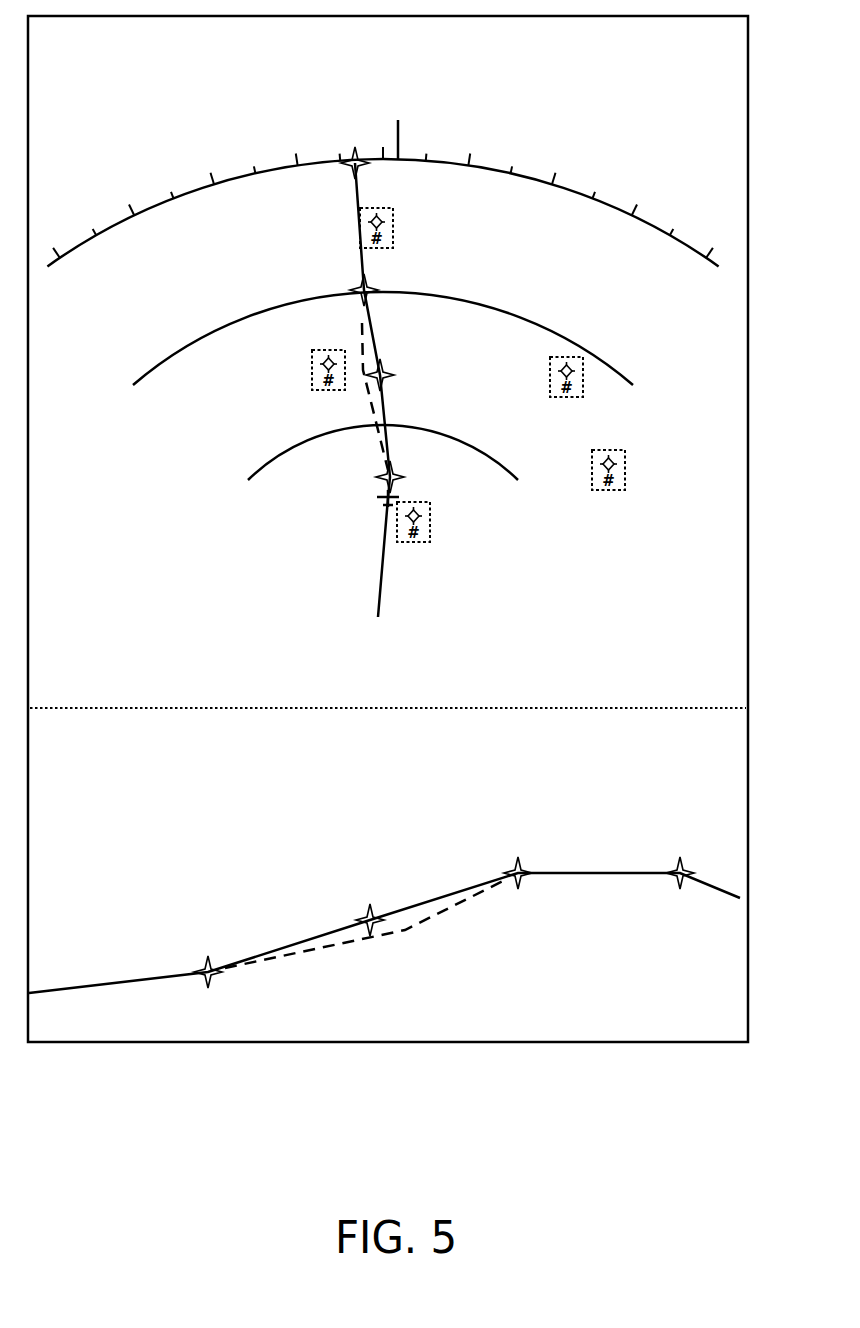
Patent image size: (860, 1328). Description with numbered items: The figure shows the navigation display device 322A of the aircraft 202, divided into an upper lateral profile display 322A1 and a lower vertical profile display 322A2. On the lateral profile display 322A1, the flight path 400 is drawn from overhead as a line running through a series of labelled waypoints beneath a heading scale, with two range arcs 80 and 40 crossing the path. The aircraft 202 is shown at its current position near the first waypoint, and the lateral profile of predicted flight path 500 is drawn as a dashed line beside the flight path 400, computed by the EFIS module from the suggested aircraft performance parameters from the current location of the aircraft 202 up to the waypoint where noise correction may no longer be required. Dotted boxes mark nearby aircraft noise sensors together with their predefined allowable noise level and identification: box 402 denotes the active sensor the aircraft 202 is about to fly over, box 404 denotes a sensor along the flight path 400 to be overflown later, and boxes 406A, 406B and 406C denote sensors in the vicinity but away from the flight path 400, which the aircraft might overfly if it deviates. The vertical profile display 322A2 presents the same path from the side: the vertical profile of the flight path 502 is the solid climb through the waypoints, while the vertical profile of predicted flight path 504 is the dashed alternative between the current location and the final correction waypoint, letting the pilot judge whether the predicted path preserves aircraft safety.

The navigation display device 322A is at (540, 1080).
The lateral profile display 322A1 is at (384, 325).
The vertical profile display 322A2 is at (384, 869).
The range ring 80 is at (365, 342).
The range ring 40 is at (368, 455).
The flight path 400 is at (381, 396).
The lateral profile of predicted flight path 500 is at (362, 328).
The aircraft 202 is at (383, 507).
The aircraft noise sensor information 404 is at (378, 250).
The aircraft noise sensor information 406A is at (333, 392).
The aircraft noise sensor information 406B is at (584, 408).
The aircraft noise sensor information 406C is at (612, 490).
The aircraft noise sensor information 402 is at (420, 542).
The vertical profile of flight path 502 is at (563, 872).
The vertical profile of predicted flight path 504 is at (408, 926).